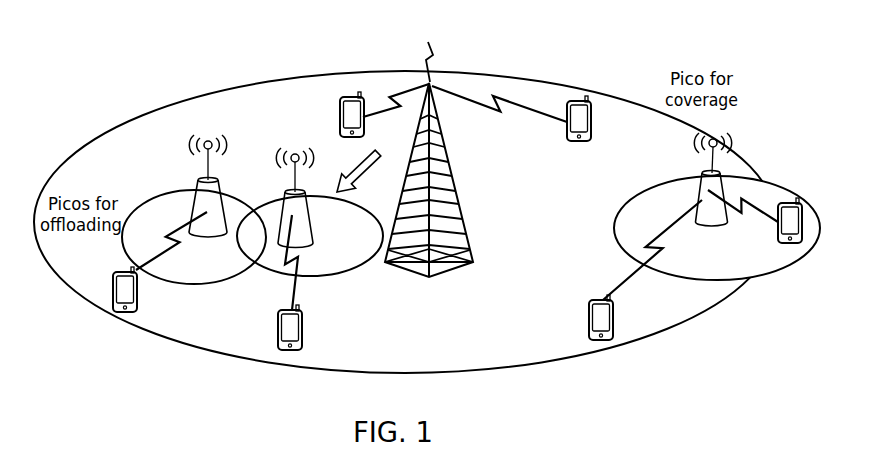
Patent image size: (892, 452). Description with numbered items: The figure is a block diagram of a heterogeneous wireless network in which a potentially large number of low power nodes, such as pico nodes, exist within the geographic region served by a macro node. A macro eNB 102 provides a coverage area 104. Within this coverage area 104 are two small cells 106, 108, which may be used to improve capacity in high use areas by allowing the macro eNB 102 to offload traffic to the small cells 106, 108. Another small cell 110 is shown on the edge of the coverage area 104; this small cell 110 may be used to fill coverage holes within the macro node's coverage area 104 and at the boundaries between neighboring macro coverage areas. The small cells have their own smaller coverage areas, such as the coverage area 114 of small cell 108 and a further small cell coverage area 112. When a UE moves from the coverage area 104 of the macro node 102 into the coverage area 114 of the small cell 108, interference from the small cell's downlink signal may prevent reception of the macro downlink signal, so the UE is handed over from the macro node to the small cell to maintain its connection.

The macro eNB 102 is at (413, 271).
The coverage area 104 is at (237, 86).
The small cell 106 is at (197, 187).
The small cell 108 is at (285, 195).
The small cell 110 is at (700, 177).
The user equipment 112 is at (349, 95).
The coverage area 114 is at (355, 268).